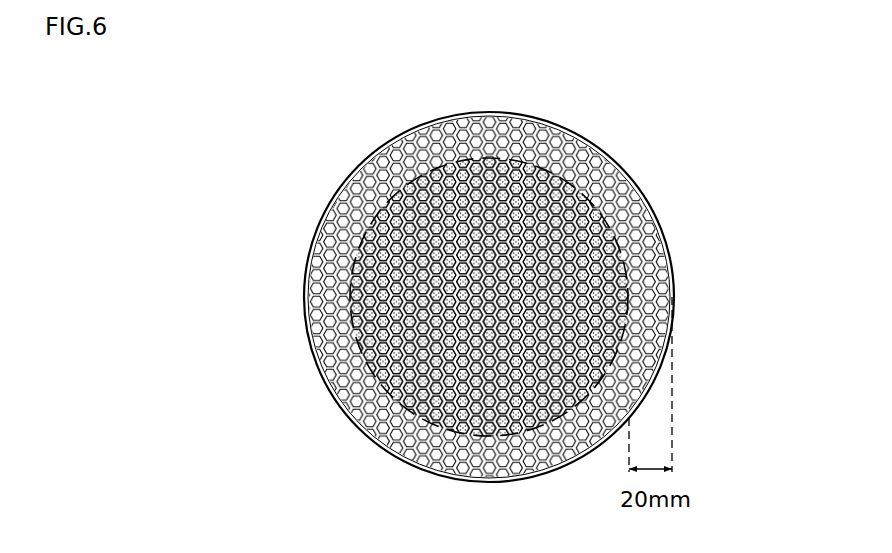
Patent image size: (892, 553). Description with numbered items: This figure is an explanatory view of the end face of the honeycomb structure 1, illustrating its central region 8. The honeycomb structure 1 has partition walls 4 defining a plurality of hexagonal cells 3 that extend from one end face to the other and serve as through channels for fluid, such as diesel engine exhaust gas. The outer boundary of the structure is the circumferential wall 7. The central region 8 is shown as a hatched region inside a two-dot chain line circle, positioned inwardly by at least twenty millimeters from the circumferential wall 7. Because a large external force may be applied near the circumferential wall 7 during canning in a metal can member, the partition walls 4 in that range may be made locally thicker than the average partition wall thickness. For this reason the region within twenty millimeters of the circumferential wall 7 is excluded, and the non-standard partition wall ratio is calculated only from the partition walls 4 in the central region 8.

The honeycomb structure 1 is at (483, 292).
The hexagonal cells 3 is at (485, 123).
The partition walls 4 is at (405, 410).
The circumferential wall 7 is at (312, 329).
The central region 8 is at (517, 477).